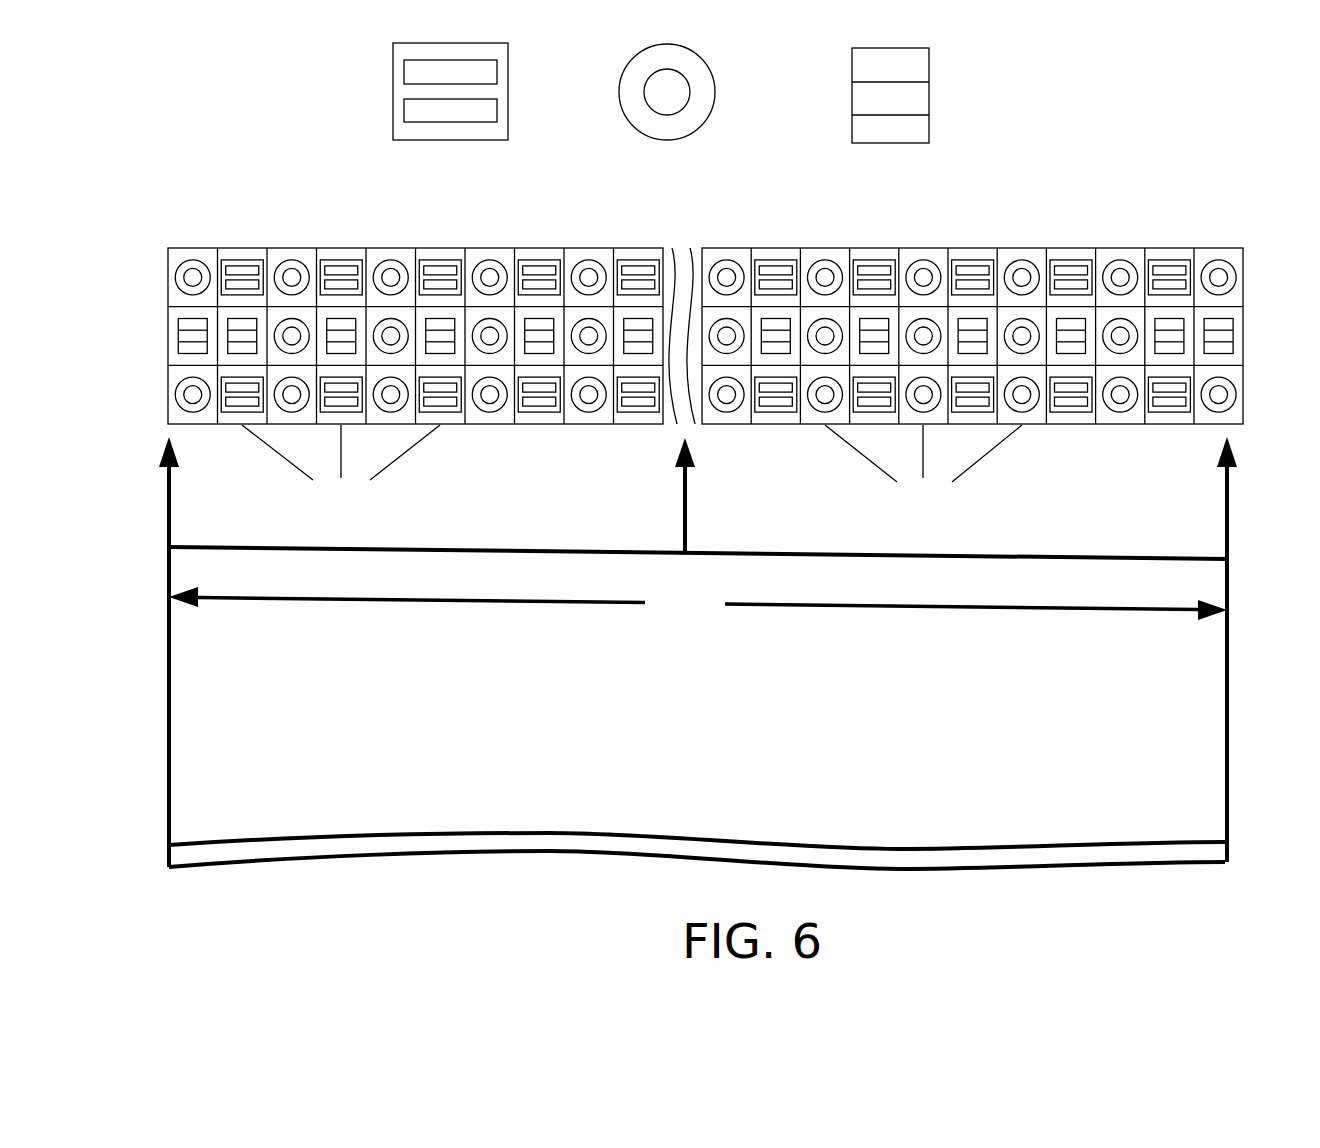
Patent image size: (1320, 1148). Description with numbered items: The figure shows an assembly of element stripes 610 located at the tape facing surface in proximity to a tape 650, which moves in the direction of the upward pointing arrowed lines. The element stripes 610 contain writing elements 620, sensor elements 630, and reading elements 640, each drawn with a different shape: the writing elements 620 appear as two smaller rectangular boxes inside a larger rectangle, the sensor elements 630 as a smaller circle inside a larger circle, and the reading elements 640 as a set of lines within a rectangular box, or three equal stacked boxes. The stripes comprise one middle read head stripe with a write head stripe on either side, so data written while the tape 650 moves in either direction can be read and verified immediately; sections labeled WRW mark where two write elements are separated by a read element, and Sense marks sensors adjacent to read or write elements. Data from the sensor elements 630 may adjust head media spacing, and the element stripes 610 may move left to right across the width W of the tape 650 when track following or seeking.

The element stripes 610 is at (1112, 193).
The writing elements 620 is at (450, 128).
The sensor elements 630 is at (666, 128).
The reading elements 640 is at (887, 133).
The tape 650 is at (698, 653).